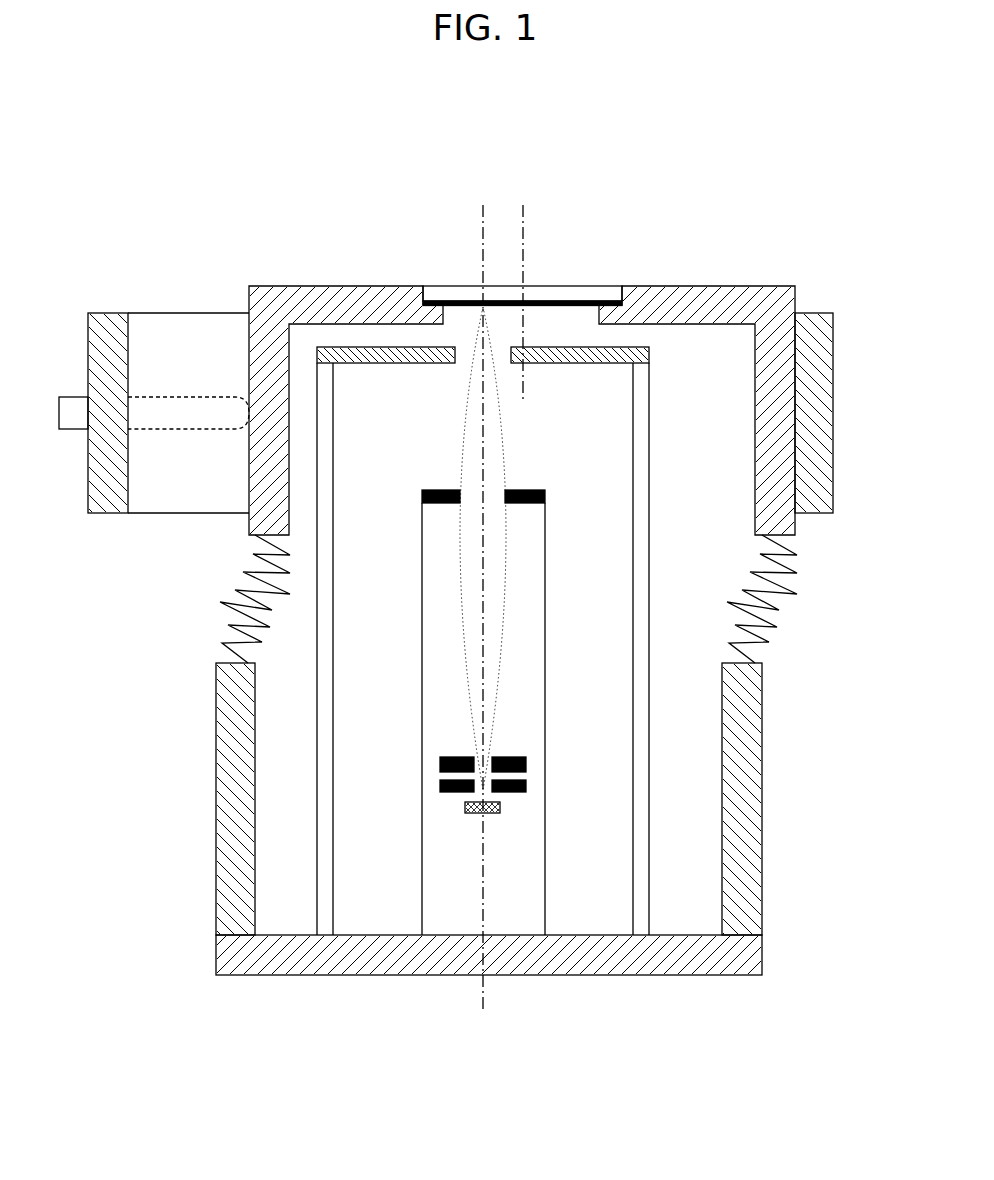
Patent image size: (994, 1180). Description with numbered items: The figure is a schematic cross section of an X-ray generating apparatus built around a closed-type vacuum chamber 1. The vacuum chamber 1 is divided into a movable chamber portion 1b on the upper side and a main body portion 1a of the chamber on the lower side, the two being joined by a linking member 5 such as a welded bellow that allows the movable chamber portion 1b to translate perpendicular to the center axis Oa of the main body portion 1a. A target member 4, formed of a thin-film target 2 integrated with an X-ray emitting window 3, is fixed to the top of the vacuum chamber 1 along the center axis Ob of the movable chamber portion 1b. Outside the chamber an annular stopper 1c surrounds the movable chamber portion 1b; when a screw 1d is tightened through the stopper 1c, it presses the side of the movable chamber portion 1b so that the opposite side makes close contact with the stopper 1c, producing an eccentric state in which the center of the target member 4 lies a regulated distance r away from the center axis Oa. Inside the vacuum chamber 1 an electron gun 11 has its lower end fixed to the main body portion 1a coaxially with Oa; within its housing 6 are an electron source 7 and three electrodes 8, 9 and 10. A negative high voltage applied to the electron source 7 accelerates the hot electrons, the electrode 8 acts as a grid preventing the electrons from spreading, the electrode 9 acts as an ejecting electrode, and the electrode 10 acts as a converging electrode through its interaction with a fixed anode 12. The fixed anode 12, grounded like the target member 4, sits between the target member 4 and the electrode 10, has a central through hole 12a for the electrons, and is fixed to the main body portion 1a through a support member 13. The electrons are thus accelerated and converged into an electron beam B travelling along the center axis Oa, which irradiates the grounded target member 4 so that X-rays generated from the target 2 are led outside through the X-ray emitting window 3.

The vacuum chamber 1 is at (175, 737).
The main body portion of the chamber 1a is at (762, 807).
The movable chamber portion 1b is at (704, 286).
The stopper 1c is at (116, 313).
The screw 1d is at (190, 397).
The target 2 is at (574, 300).
The X-ray emitting window 3 is at (612, 295).
The target member 4 is at (522, 238).
The linking member 5 is at (238, 590).
The housing 6 is at (545, 602).
The electron source 7 is at (495, 813).
The electrode (grid) 8 is at (455, 792).
The electrode (ejecting electrode) 9 is at (510, 757).
The electrode (converging electrode) 10 is at (530, 490).
The electron gun 11 is at (411, 696).
The fixed anode 12 is at (388, 347).
The through hole 12a is at (469, 364).
The support member 13 is at (650, 480).
The electron beam B is at (469, 447).
The center axis of the main body portion Oa is at (483, 594).
The center axis of the movable chamber portion Ob is at (522, 288).
The regulated distance r is at (483, 252).